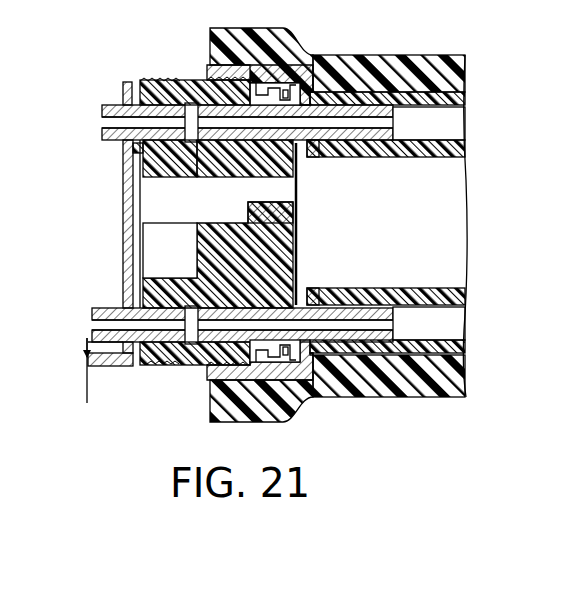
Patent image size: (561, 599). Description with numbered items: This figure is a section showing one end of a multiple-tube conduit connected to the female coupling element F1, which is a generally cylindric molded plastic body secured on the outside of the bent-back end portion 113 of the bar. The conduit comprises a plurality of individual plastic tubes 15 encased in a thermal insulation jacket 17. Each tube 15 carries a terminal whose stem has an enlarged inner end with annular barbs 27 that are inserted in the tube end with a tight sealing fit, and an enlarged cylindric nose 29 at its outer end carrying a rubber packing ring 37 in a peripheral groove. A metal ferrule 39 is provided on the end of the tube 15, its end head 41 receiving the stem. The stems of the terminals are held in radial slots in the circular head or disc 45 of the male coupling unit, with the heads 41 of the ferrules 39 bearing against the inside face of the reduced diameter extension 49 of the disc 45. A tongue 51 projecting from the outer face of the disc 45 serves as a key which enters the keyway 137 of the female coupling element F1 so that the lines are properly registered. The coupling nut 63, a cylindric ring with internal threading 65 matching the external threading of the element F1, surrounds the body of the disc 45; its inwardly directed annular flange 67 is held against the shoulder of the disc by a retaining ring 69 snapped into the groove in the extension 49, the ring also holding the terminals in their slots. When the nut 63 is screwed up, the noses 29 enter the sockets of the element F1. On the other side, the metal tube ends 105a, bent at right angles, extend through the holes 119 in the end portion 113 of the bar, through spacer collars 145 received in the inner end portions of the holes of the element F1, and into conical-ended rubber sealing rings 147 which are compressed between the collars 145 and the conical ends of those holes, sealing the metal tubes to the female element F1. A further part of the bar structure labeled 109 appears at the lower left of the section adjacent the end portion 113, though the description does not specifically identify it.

The plastic tube 15 is at (447, 157).
The thermal insulation jacket 17 is at (438, 57).
The annular barbs 27 is at (352, 158).
The cylindric nose 29 is at (193, 170).
The packing ring 37 is at (200, 170).
The metal ferrule 39 is at (385, 155).
The end head 41 is at (301, 148).
The circular head 45 is at (299, 237).
The reduced diameter extension 49 is at (313, 397).
The tongue 51 is at (223, 222).
The coupling nut 63 is at (237, 380).
The internal threading 65 is at (232, 50).
The annular flange 67 is at (292, 375).
The retaining ring 69 is at (283, 86).
The metal tube ends 105a is at (102, 106).
The flange 109 is at (105, 367).
The end portion of the bar 113 is at (123, 215).
The holes 119 is at (122, 100).
The keyway 137 is at (158, 250).
The spacer collar 145 is at (123, 156).
The sealing ring 147 is at (180, 80).
The female coupling element F1 is at (143, 371).